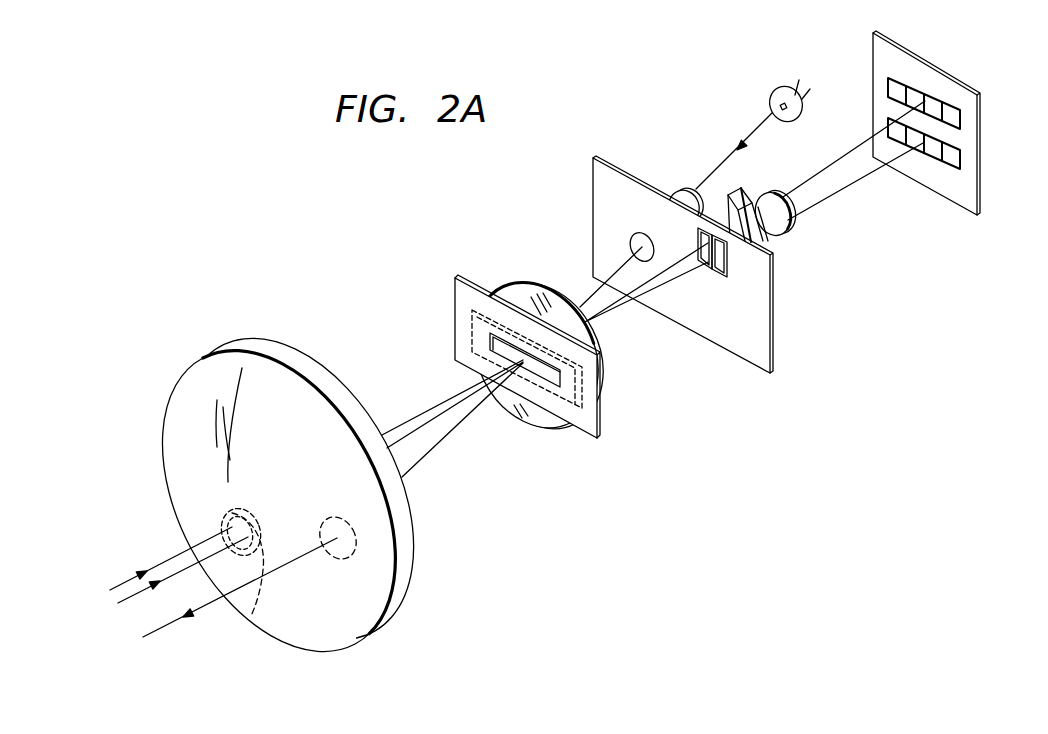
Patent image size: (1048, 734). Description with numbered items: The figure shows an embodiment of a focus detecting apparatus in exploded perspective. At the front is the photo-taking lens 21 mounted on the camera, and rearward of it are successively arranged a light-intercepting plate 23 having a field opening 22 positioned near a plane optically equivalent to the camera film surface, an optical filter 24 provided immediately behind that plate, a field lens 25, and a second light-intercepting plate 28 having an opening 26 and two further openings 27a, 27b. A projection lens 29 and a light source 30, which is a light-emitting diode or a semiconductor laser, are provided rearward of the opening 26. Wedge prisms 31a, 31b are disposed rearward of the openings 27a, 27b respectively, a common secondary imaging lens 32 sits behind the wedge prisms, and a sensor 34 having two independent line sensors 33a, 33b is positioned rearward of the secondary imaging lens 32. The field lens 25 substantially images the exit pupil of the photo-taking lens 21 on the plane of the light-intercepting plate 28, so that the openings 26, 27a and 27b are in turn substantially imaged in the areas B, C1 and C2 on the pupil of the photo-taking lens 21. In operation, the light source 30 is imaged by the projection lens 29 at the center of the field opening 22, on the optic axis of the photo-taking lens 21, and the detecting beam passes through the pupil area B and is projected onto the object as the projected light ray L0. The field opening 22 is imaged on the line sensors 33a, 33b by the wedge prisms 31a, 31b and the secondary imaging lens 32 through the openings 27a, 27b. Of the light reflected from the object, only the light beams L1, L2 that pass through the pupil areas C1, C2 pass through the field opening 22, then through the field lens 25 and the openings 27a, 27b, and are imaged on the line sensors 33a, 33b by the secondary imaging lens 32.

The photo-taking lens 21 is at (350, 644).
The field opening 22 is at (562, 385).
The light-intercepting plate 23 is at (580, 428).
The optical filter 24 is at (472, 327).
The field lens 25 is at (519, 280).
The opening 26 is at (631, 240).
The opening 27a is at (716, 252).
The opening 27b is at (727, 271).
The light-intercepting plate 28 is at (594, 178).
The projection lens 29 is at (676, 190).
The light source 30 is at (772, 93).
The wedge prism 31a is at (742, 191).
The wedge prism 31b is at (764, 237).
The secondary imaging lens 32 is at (790, 226).
The line sensor 33a is at (963, 126).
The line sensor 33b is at (963, 166).
The sensor 34 is at (876, 52).
The area B is at (357, 540).
The pupil area C1 is at (246, 580).
The pupil area C2 is at (232, 513).
The projected light ray L0 is at (163, 628).
The light beam L1 is at (145, 591).
The light beam L2 is at (128, 580).